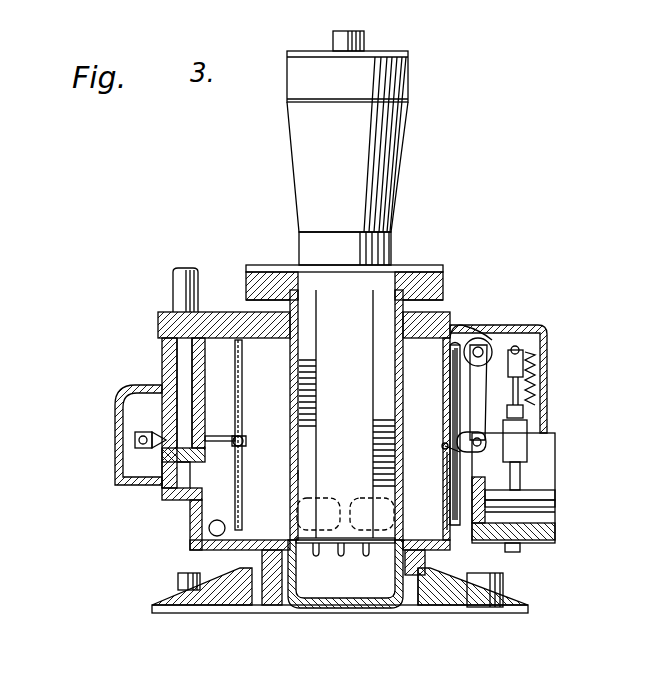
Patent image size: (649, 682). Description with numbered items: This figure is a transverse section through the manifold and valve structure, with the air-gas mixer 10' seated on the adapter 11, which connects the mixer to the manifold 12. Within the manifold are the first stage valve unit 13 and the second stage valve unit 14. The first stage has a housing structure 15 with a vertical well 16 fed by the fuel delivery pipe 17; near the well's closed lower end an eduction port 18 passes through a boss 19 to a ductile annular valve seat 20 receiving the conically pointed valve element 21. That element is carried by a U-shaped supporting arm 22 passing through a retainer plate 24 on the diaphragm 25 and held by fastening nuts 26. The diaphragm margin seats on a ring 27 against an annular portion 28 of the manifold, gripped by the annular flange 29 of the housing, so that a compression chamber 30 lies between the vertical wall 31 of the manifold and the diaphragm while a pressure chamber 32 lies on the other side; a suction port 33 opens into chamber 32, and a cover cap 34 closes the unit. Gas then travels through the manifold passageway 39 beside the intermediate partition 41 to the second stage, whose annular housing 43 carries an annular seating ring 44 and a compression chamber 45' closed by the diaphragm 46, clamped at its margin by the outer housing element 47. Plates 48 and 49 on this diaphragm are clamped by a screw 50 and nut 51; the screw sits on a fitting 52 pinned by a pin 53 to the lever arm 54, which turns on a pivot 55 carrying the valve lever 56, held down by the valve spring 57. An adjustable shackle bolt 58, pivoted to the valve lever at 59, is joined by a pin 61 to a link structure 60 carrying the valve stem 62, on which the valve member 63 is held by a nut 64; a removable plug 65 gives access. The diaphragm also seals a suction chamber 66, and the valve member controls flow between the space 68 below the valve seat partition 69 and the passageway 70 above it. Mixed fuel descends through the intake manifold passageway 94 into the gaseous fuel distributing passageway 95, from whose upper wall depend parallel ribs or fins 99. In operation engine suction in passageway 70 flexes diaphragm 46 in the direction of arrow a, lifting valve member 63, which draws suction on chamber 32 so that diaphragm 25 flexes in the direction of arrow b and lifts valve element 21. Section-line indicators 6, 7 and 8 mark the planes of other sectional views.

The air-gas mixer 10' is at (371, 148).
The adapter 11 is at (264, 202).
The manifold 12 is at (376, 622).
The first stage valve unit 13 is at (157, 326).
The second stage valve unit 14 is at (490, 342).
The housing structure 15 is at (198, 358).
The vertical well 16 is at (186, 382).
The fuel delivery pipe 17 is at (176, 282).
The eduction port 18 is at (182, 462).
The boss 19 is at (166, 450).
The annular valve seat 20 is at (156, 442).
The conically pointed valve element 21 is at (137, 442).
The U-shaped supporting arm 22 is at (215, 434).
The retainer plate 24 is at (243, 374).
The diaphragm 25 is at (237, 372).
The fastening nuts 26 is at (244, 438).
The ring 27 is at (240, 608).
The annular portion 28 is at (272, 605).
The annular flange 29 is at (190, 576).
The compression chamber 30 is at (275, 485).
The vertical wall 31 is at (293, 410).
The pressure chamber 32 is at (210, 530).
The suction port 33 is at (210, 548).
The cover cap 34 is at (130, 420).
The manifold passageway 39 is at (318, 506).
The intermediate partition 41 is at (350, 506).
The annular housing 43 is at (400, 334).
The annular seating ring 44 is at (452, 322).
The compression chamber 45' is at (437, 604).
The diaphragm 46 is at (449, 352).
The outer housing element 47 is at (524, 333).
The plate 48 is at (454, 390).
The plate 49 is at (454, 406).
The screw 50 is at (445, 448).
The nut 51 is at (450, 468).
The fitting 52 is at (447, 490).
The pin 53 is at (482, 440).
The lever arm 54 is at (458, 428).
The pivot 55 is at (480, 350).
The valve lever 56 is at (520, 346).
The valve spring 57 is at (538, 380).
The adjustable shackle bolt 58 is at (522, 416).
The pivot point 59 is at (521, 358).
The link structure 60 is at (528, 446).
The pin 61 is at (548, 442).
The valve stem 62 is at (522, 474).
The valve member 63 is at (536, 506).
The nut 64 is at (532, 530).
The removable plug 65 is at (513, 552).
The suction chamber 66 is at (470, 575).
The space 68 is at (546, 514).
The valve seat partition 69 is at (540, 497).
The passageway 70 is at (488, 482).
The intake manifold passageway 94 is at (385, 282).
The gaseous fuel distributing passageway 95 is at (348, 592).
The ribs or fins 99 is at (366, 556).
The arrow a is at (470, 505).
The arrow b is at (218, 487).
The section line 6 is at (112, 456).
The section line 7 is at (226, 270).
The section line 8 is at (578, 318).